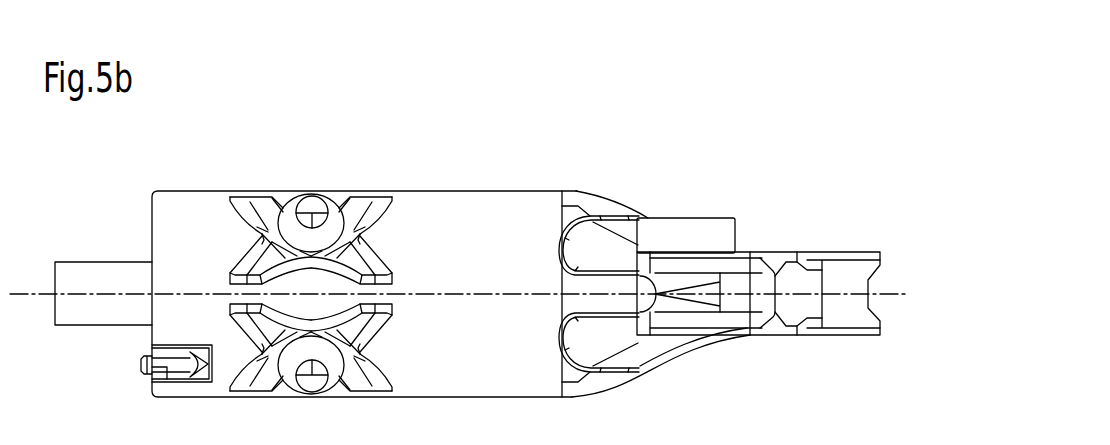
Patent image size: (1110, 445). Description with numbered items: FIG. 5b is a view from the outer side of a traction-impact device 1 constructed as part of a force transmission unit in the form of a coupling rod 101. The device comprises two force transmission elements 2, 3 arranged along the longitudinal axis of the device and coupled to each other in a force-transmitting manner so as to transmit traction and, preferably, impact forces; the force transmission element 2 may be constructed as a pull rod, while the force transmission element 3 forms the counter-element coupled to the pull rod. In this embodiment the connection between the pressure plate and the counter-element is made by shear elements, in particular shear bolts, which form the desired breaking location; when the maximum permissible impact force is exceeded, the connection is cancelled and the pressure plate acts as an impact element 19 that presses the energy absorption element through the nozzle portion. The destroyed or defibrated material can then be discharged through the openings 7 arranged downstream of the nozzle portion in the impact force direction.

The traction-impact device 1 is at (573, 135).
The coupling rod 101 is at (690, 135).
The force transmission element 2 is at (96, 278).
The force transmission element 3 is at (472, 216).
The openings 7 is at (613, 247).
The impact element 19 is at (312, 212).